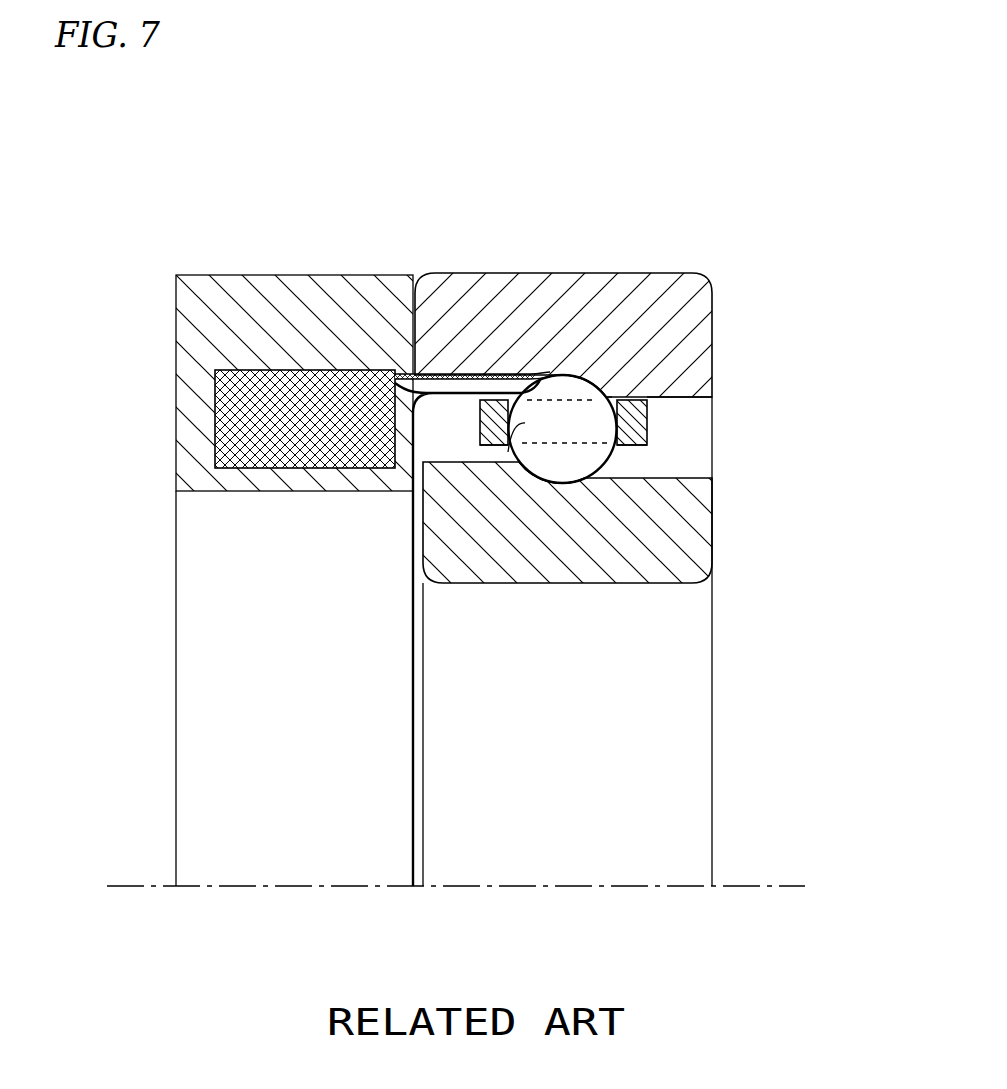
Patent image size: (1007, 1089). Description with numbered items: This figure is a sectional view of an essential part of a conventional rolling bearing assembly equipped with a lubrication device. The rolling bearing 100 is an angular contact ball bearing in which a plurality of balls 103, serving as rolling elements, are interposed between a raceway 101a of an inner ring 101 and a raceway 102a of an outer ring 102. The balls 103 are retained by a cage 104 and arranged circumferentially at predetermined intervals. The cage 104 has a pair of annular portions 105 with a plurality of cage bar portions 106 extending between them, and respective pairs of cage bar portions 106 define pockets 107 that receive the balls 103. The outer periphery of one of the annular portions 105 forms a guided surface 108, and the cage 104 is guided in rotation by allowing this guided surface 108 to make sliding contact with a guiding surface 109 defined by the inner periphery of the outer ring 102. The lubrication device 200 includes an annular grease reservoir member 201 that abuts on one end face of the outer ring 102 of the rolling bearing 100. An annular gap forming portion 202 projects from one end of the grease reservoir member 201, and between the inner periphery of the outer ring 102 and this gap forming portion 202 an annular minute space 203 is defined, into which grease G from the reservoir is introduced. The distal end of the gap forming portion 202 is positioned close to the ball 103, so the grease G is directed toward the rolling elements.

The rolling bearing 100 is at (578, 392).
The inner ring 101 is at (661, 560).
The raceway of the inner ring 101a is at (547, 488).
The outer ring 102 is at (688, 308).
The raceway of the outer ring 102a is at (551, 371).
The ball 103 is at (570, 380).
The cage 104 is at (664, 431).
The annular portion 105 is at (637, 445).
The cage bar portion 106 is at (545, 432).
The pocket 107 is at (508, 452).
The guided surface 108 is at (640, 395).
The guiding surface 109 is at (612, 400).
The lubrication device 200 is at (359, 512).
The grease reservoir member 201 is at (227, 303).
The gap forming portion 202 is at (480, 387).
The minute space 203 is at (480, 386).
The grease G is at (270, 425).